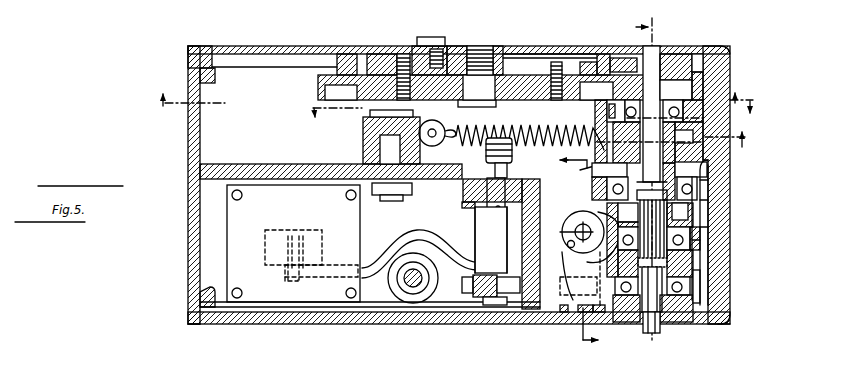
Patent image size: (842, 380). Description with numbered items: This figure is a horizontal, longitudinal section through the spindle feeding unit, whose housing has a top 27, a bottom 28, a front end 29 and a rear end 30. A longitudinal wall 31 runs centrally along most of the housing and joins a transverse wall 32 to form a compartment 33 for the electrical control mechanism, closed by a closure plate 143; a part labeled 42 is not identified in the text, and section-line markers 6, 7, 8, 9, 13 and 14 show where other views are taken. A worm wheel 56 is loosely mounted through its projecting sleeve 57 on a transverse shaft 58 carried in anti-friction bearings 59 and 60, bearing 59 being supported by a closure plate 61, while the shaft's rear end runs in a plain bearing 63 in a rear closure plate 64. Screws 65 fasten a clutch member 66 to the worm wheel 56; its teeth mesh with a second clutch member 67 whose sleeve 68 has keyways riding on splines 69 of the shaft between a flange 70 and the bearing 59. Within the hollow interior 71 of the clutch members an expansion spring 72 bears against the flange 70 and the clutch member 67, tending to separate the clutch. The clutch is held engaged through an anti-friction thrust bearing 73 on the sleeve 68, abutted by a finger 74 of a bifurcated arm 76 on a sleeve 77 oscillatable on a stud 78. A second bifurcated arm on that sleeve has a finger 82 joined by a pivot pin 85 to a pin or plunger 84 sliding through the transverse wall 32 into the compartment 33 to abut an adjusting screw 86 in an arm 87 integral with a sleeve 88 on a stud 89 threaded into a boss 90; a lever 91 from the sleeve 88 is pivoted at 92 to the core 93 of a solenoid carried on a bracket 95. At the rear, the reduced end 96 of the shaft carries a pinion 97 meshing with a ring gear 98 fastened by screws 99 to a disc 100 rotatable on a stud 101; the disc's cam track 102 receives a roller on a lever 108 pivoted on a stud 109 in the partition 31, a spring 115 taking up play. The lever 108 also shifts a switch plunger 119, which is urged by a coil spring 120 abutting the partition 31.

The section line 6- 6 is at (610, 182).
The section line 7- 7 is at (652, 149).
The section line 8- 8 is at (531, 110).
The terminal pins 9 is at (295, 251).
The section line 13- 13 is at (452, 93).
The section line 14- 14 is at (582, 172).
The top 27 is at (204, 378).
The bottom 28 is at (274, 100).
The front end 29 is at (190, 150).
The rear end 30 is at (720, 212).
The longitudinal wall 31 is at (291, 168).
The transverse wall 32 is at (536, 221).
The compartment 33 is at (190, 252).
The bearing block 42 is at (597, 106).
The worm wheel 56 is at (702, 181).
The projecting sleeve 57 is at (676, 170).
The transverse shaft 58 is at (663, 92).
The anti-friction bearing 59 is at (640, 312).
The anti-friction bearing 60 is at (697, 102).
The closure plate 61 is at (723, 312).
The plain bearing 63 is at (668, 54).
The closure plate 64 is at (300, 46).
The screws 65 is at (594, 170).
The clutch member 66 is at (702, 199).
The second clutch member 67 is at (702, 227).
The sleeve 68 is at (668, 264).
The splines 69 is at (667, 275).
The flange 70 is at (663, 198).
The hollow interior 71 is at (605, 224).
The expansion spring 72 is at (653, 240).
The anti-friction thrust bearing 73 is at (692, 240).
The finger 74 is at (713, 263).
The bifurcated arm 76 is at (562, 260).
The sleeve 77 is at (580, 213).
The stud 78 is at (574, 234).
The finger 82 is at (583, 305).
The pin or plunger 84 is at (574, 308).
The pivot pin 85 is at (598, 310).
The adjusting screw 86 is at (465, 280).
The arm 87 is at (480, 298).
The sleeve 88 is at (487, 254).
The stud 89 is at (497, 305).
The boss 90 is at (475, 215).
The lever 91 is at (400, 242).
The pivot 92 is at (286, 272).
The core 93 is at (268, 262).
The bracket 95 is at (233, 255).
The reduced end 96 is at (660, 47).
The pinion 97 is at (705, 50).
The ring gear 98 is at (582, 76).
The screws 99 is at (556, 62).
The disc 100 is at (395, 76).
The stud 101 is at (492, 50).
The cam track 102 is at (333, 97).
The lever 108 is at (368, 148).
The stud 109 is at (368, 110).
The spring 115 is at (547, 132).
The switch plunger 119 is at (497, 128).
The coil spring 120 is at (486, 151).
The closure plate 143 is at (320, 325).